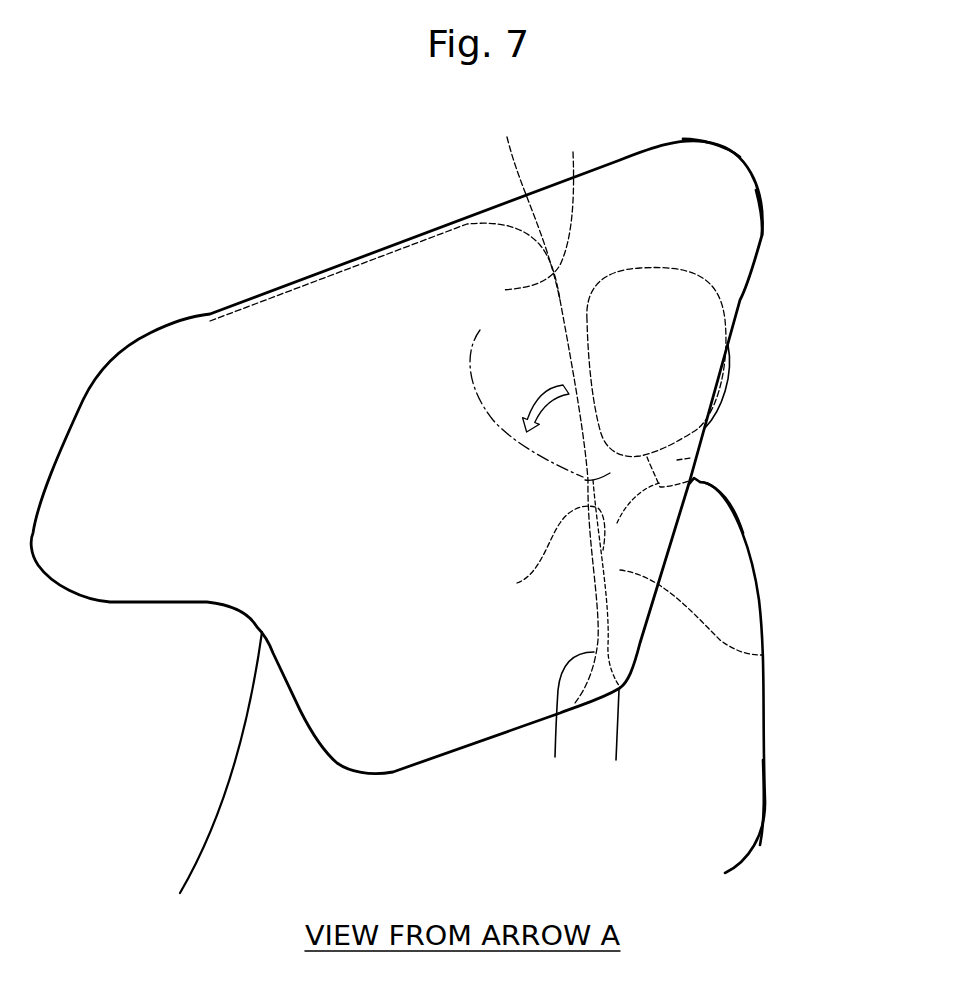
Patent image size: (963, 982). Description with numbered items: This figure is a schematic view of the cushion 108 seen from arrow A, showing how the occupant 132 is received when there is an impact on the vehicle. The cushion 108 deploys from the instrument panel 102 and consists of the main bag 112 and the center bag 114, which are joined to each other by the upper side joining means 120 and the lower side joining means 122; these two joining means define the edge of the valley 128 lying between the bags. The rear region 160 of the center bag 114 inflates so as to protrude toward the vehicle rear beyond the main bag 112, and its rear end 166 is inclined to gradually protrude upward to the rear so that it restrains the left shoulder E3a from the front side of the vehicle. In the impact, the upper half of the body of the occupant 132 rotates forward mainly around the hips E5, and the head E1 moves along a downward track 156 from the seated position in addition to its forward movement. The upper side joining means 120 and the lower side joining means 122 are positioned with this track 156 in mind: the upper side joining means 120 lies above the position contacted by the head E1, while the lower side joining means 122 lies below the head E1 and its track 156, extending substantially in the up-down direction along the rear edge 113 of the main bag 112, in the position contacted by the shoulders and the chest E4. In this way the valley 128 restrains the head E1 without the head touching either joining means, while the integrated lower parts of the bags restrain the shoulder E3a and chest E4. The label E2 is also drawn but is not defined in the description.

The cushion 108 is at (198, 233).
The instrument panel 102 is at (237, 778).
The main bag 112 is at (572, 401).
The rear edge 113 is at (536, 555).
The center bag 114 is at (741, 158).
The upper side joining means 120 is at (343, 266).
The lower side joining means 122 is at (571, 723).
The valley 128 is at (553, 205).
The occupant 132 is at (762, 600).
The track 156 is at (538, 403).
The rear region 160 is at (763, 205).
The rear end 166 is at (740, 313).
The head E1 is at (722, 297).
The region E2 is at (690, 460).
The left shoulder E3a is at (707, 512).
The chest E4 is at (763, 655).
The hips E5 is at (742, 798).